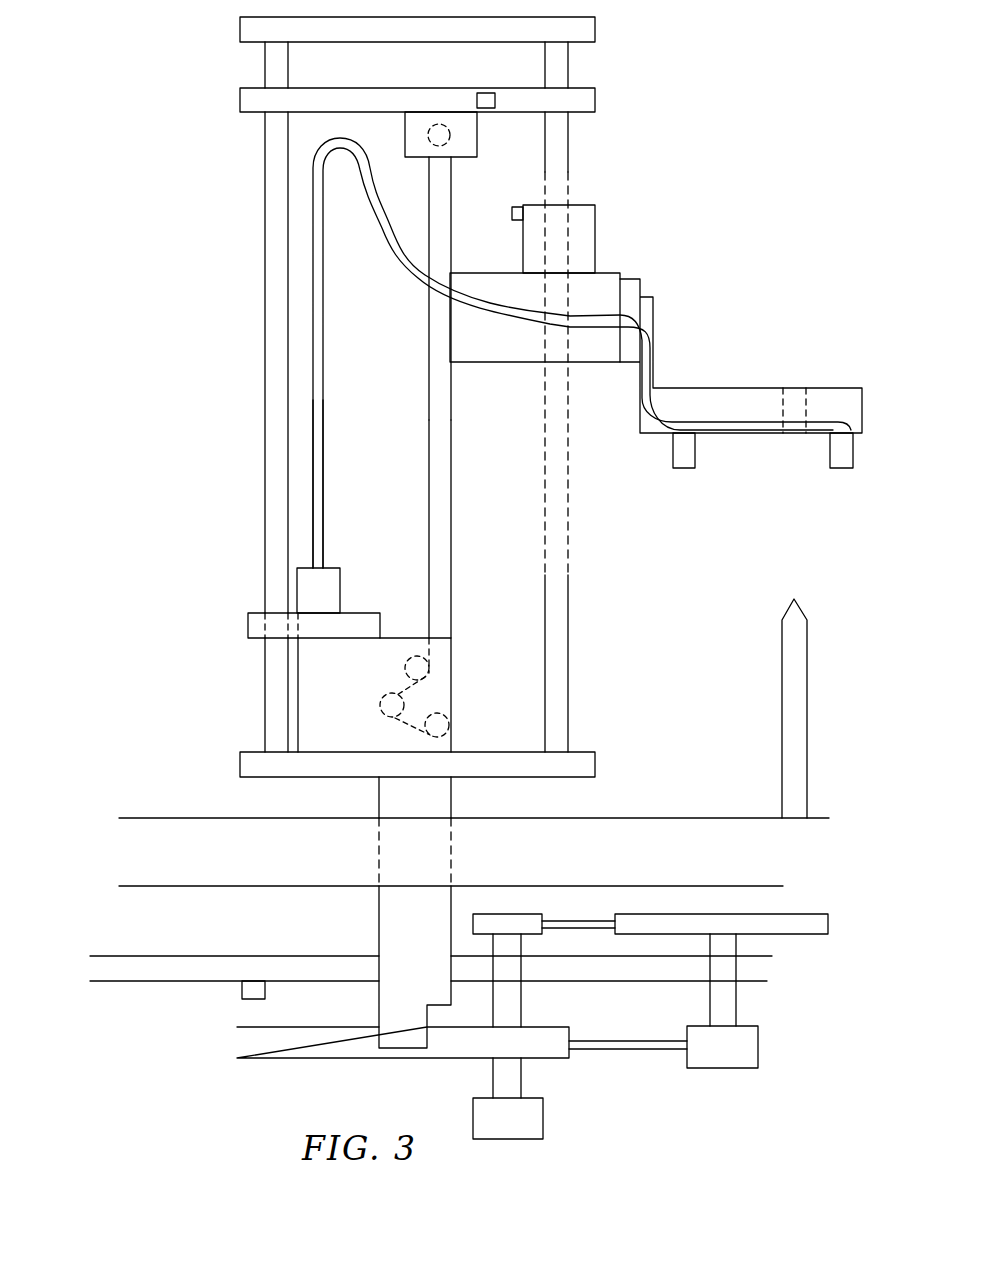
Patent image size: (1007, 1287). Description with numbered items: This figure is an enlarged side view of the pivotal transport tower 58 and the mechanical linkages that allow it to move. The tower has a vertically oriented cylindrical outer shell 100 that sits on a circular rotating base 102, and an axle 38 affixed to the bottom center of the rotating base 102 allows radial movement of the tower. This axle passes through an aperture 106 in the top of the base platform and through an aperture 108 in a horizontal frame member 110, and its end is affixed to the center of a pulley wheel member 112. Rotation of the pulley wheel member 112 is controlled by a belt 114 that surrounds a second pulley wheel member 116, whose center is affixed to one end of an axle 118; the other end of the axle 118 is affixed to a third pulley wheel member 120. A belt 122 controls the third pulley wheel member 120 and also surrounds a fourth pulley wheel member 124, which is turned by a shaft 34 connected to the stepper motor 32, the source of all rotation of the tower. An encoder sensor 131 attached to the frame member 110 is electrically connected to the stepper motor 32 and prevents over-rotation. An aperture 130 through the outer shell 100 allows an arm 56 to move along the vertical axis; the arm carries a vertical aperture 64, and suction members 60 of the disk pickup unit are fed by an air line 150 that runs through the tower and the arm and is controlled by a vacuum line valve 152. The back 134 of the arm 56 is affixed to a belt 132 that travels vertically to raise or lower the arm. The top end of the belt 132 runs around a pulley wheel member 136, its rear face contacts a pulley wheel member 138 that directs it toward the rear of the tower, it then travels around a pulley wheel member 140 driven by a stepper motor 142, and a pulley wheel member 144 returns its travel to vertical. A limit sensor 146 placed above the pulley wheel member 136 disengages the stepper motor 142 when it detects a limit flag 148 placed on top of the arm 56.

The stepper motor 32 is at (522, 1129).
The shaft 34 is at (522, 1003).
The axle 38 is at (455, 787).
The arm 56 is at (676, 315).
The pivotal transport tower 58 is at (236, 163).
The suction members 60 is at (672, 460).
The vertical aperture 64 is at (783, 402).
The cylindrical outer shell 100 is at (265, 331).
The rotating base 102 is at (240, 762).
The aperture 106 is at (379, 858).
The aperture 108 is at (379, 965).
The horizontal frame member 110 is at (153, 983).
The pulley wheel member 112 is at (316, 1058).
The belt 114 is at (632, 1053).
The second pulley wheel member 116 is at (742, 1059).
The axle 118 is at (737, 1004).
The third pulley wheel member 120 is at (807, 935).
The belt 122 is at (570, 920).
The fourth pulley wheel member 124 is at (508, 913).
The aperture 130 is at (572, 196).
The encoder sensor 131 is at (240, 998).
The belt 132 is at (451, 485).
The back of the arm 134 is at (450, 328).
The pulley wheel member 136 is at (435, 126).
The pulley wheel member 138 is at (405, 666).
The pulley wheel member 140 is at (385, 700).
The stepper motor 142 is at (451, 668).
The pulley wheel member 144 is at (449, 722).
The limit sensor 146 is at (485, 93).
The limit flag 148 is at (517, 207).
The air line 150 is at (313, 405).
The vacuum line valve 152 is at (297, 590).